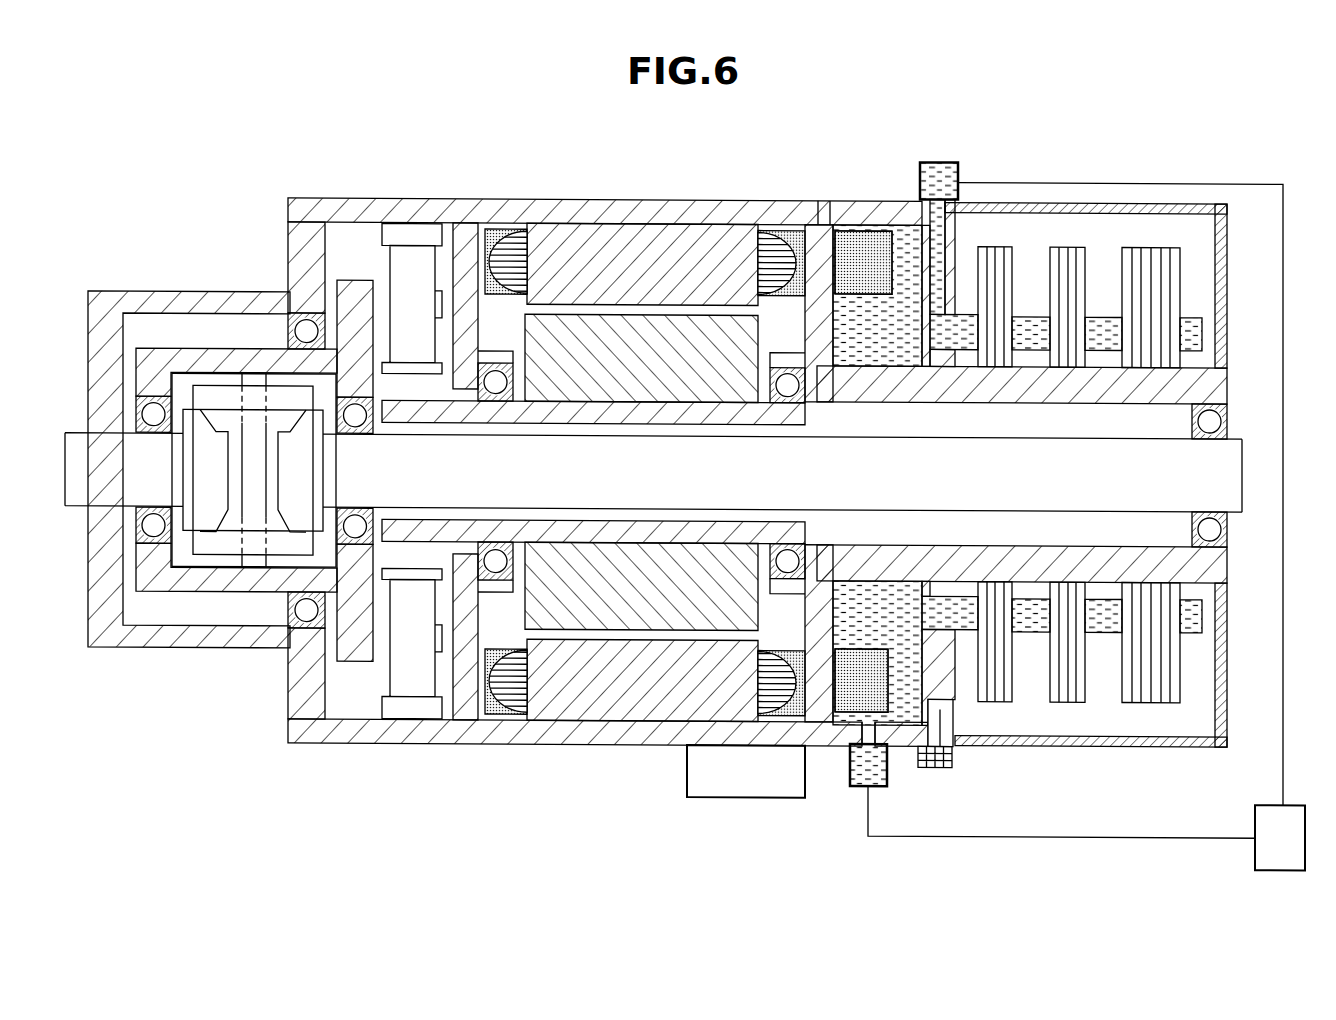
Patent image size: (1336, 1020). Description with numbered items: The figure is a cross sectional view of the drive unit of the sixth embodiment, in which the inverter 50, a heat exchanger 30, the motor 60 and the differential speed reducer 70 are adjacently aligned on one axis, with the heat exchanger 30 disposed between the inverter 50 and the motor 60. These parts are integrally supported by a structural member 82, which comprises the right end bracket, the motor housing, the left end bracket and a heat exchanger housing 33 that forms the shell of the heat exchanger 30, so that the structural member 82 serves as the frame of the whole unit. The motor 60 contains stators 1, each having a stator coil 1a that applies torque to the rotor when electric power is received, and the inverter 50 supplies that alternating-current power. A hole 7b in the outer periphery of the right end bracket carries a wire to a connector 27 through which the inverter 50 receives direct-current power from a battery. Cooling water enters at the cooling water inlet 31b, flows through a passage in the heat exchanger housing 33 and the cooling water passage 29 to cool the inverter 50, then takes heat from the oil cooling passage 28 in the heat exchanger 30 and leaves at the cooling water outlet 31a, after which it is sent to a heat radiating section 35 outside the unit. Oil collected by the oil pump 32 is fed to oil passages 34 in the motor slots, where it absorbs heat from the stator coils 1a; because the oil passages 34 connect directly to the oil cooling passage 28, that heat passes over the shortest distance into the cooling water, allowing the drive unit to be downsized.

The stator 1 is at (621, 222).
The stator coil 1a is at (768, 230).
The hole 7b is at (953, 700).
The connector 27 is at (952, 762).
The oil cooling passage 28 is at (858, 238).
The cooling water passage 29 is at (1030, 308).
The heat exchanger 30 is at (905, 737).
The cooling water outlet 31a is at (860, 788).
The cooling water inlet 31b is at (934, 170).
The oil pump 32 is at (716, 773).
The heat exchanger housing 33 is at (872, 210).
The oil passage 34 is at (802, 237).
The heat radiating section 35 is at (1288, 800).
The inverter 50 is at (1115, 231).
The motor 60 is at (542, 198).
The differential speed reducer 70 is at (237, 288).
The structural member 82 is at (600, 743).